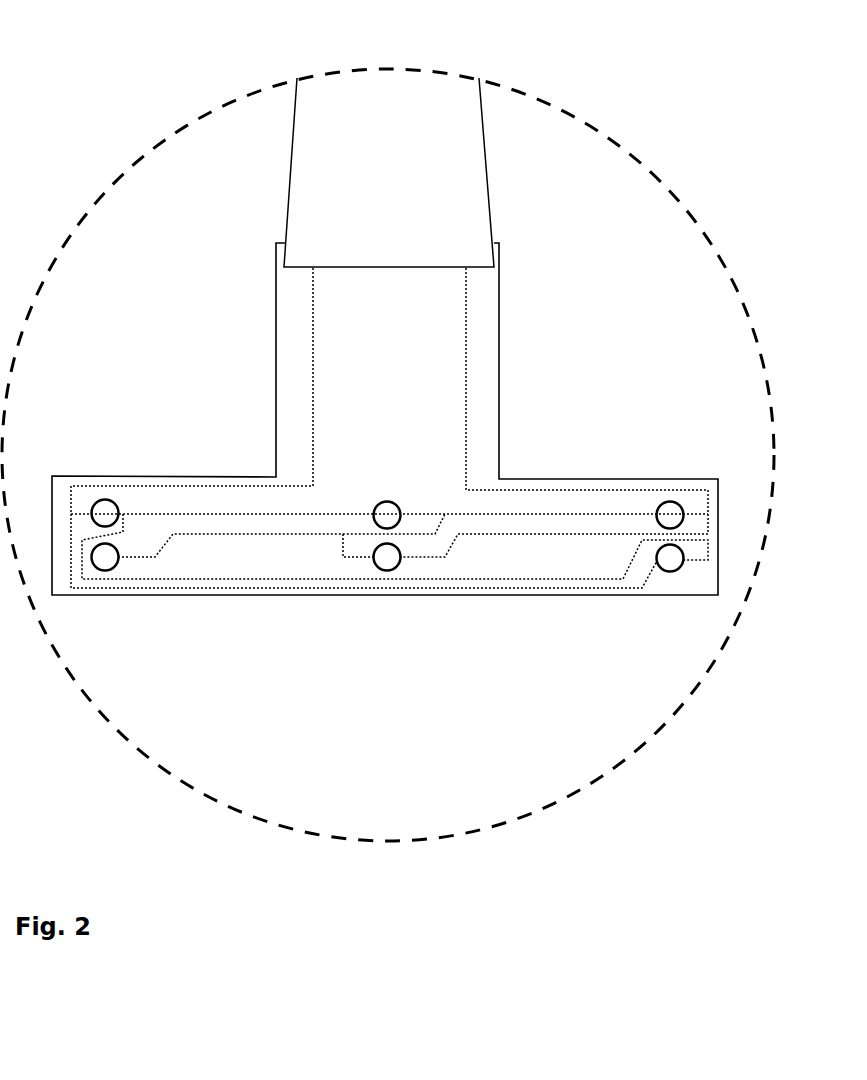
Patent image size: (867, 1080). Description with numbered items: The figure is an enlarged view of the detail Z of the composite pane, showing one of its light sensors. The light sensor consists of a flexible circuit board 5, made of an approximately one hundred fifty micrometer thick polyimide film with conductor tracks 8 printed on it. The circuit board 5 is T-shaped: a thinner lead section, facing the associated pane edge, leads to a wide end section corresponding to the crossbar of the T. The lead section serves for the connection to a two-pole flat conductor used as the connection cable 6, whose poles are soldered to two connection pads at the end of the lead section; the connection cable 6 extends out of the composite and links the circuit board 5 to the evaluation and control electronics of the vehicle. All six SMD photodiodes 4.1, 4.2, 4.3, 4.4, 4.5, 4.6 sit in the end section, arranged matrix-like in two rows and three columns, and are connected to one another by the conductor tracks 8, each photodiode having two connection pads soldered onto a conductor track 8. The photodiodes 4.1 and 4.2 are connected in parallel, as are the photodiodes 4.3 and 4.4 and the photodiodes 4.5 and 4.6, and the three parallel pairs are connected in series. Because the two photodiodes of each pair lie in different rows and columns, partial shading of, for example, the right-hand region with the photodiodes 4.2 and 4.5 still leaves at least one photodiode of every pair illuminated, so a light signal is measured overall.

The detail Z is at (188, 120).
The connection cable 6 is at (473, 193).
The flexible circuit board 5 is at (482, 347).
The conductor tracks 8 is at (313, 332).
The photodiode 4.1 is at (103, 503).
The photodiode 4.2 is at (672, 564).
The photodiode 4.3 is at (395, 508).
The photodiode 4.4 is at (105, 562).
The photodiode 4.5 is at (668, 508).
The photodiode 4.6 is at (388, 563).